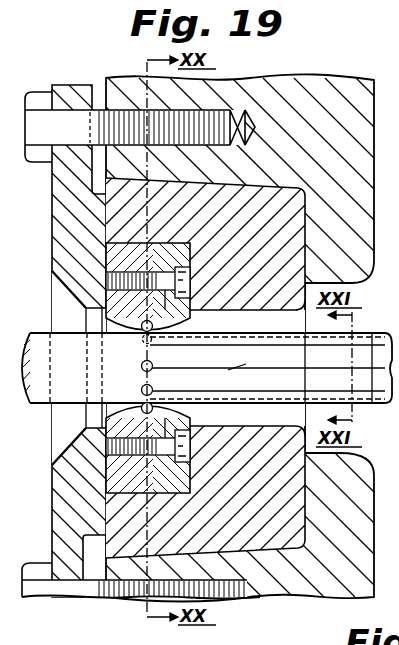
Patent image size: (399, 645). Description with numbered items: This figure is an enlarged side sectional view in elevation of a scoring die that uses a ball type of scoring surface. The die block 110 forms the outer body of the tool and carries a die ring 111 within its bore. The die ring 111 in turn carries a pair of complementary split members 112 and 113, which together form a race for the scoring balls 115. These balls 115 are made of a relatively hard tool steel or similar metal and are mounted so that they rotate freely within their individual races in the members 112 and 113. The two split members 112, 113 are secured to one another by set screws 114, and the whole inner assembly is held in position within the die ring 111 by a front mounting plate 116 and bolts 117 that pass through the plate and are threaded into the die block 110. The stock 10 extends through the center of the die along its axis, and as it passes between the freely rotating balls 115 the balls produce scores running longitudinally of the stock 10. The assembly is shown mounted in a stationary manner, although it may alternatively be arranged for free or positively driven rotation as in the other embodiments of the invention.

The stock 10 is at (45, 308).
The die block 110 is at (290, 585).
The die ring 111 is at (133, 535).
The split member 112 is at (107, 258).
The split member 113 is at (200, 317).
The set screws 114 is at (198, 420).
The scoring balls 115 is at (140, 330).
The front mounting plate 116 is at (52, 512).
The bolts 117 is at (97, 110).